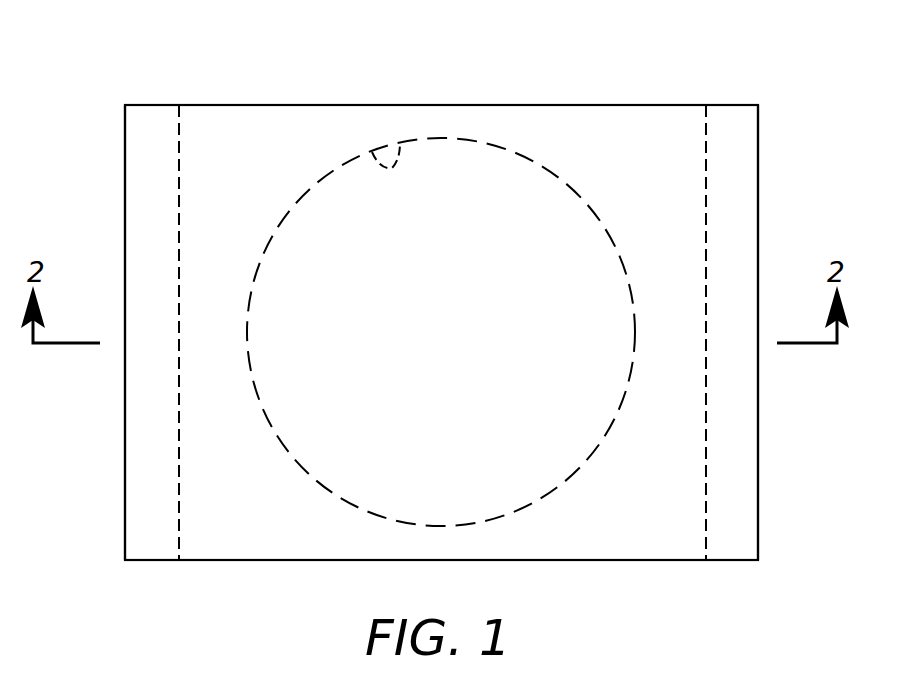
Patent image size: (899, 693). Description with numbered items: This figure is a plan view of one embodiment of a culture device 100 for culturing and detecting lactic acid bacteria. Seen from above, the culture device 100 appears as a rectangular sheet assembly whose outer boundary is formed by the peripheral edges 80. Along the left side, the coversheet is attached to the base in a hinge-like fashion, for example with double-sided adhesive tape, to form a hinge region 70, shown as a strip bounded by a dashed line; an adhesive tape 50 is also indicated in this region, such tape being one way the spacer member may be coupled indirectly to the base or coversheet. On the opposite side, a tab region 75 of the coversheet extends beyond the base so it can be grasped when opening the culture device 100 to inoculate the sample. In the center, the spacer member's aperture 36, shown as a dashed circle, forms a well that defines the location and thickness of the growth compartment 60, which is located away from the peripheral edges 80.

The culture device 100 is at (140, 54).
The aperture 36 is at (403, 140).
The growth compartment 60 is at (485, 175).
The peripheral edges 80 is at (606, 105).
The tab region 75 is at (757, 98).
The adhesive tape 50 is at (145, 176).
The hinge region 70 is at (140, 405).